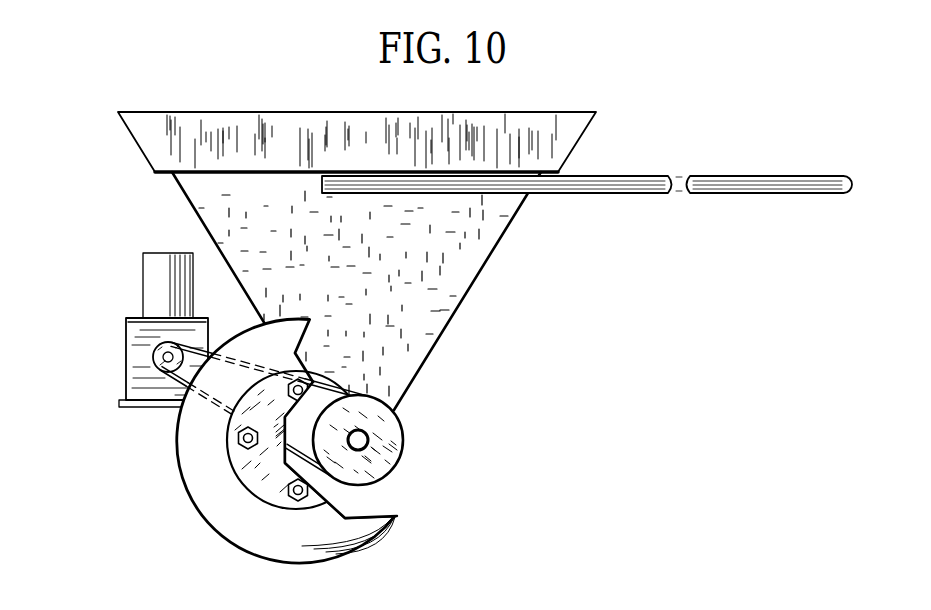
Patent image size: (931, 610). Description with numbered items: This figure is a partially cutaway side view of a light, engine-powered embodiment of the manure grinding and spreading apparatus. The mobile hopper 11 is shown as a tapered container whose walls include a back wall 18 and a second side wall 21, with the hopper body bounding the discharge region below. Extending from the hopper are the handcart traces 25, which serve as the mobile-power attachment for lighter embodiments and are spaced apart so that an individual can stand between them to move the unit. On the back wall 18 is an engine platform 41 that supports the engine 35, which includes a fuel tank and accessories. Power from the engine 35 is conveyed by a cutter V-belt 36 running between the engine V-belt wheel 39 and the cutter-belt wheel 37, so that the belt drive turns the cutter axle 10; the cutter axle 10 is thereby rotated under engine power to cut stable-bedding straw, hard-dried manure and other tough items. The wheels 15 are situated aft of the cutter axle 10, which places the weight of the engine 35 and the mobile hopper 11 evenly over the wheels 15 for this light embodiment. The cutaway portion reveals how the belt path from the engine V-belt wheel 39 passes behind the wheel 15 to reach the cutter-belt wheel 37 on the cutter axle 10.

The mobile hopper 11 is at (650, 70).
The back wall 18 is at (200, 222).
The second side wall 21 is at (427, 250).
The handcart traces 25 is at (790, 180).
The engine 35 is at (143, 317).
The engine V-belt wheel 39 is at (158, 352).
The engine platform 41 is at (148, 408).
The wheels 15 is at (233, 517).
The cutter V-belt 36 is at (347, 395).
The cutter-belt wheel 37 is at (378, 417).
The cutter axle 10 is at (368, 438).